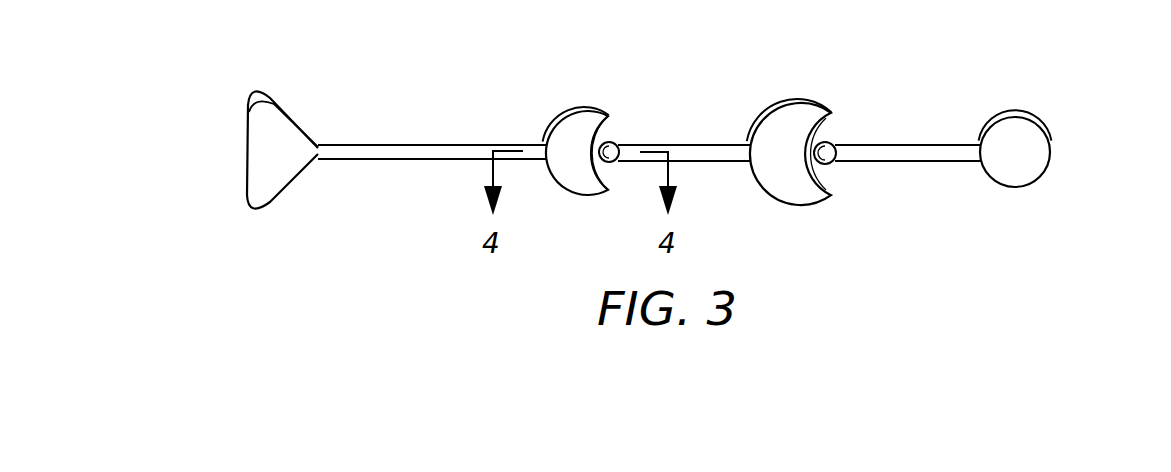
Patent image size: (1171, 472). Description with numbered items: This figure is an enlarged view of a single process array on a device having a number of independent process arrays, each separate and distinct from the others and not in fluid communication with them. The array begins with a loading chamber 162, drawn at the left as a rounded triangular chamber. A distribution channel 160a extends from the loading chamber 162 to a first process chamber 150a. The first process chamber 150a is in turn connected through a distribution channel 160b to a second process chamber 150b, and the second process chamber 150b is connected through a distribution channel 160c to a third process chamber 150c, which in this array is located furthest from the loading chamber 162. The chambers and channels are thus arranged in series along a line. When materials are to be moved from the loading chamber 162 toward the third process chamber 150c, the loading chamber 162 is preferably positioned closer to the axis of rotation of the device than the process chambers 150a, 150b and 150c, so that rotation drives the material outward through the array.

The loading chamber 162 is at (258, 153).
The distribution channel 160a is at (428, 143).
The distribution channel 160b is at (700, 143).
The distribution channel 160c is at (892, 145).
The first process chamber 150a is at (577, 122).
The second process chamber 150b is at (792, 112).
The third process chamber 150c is at (1013, 127).